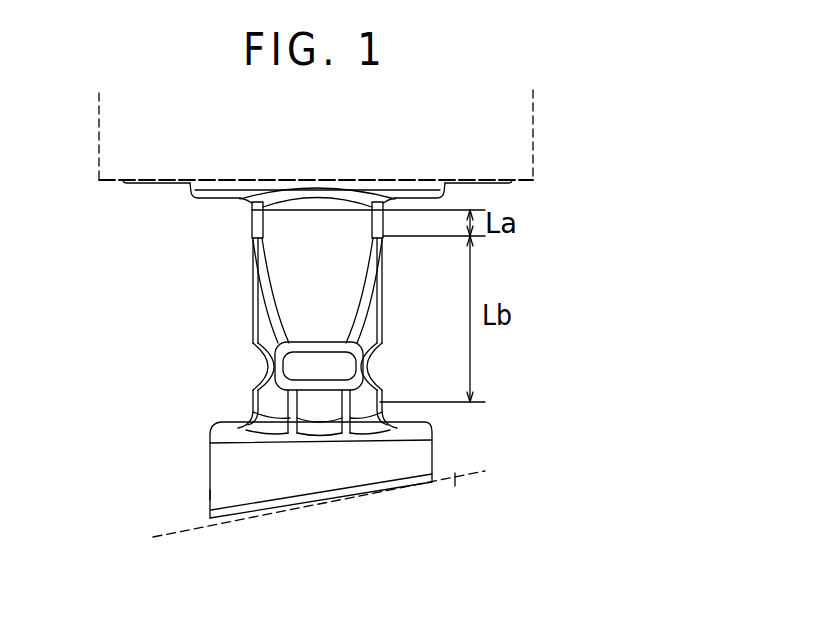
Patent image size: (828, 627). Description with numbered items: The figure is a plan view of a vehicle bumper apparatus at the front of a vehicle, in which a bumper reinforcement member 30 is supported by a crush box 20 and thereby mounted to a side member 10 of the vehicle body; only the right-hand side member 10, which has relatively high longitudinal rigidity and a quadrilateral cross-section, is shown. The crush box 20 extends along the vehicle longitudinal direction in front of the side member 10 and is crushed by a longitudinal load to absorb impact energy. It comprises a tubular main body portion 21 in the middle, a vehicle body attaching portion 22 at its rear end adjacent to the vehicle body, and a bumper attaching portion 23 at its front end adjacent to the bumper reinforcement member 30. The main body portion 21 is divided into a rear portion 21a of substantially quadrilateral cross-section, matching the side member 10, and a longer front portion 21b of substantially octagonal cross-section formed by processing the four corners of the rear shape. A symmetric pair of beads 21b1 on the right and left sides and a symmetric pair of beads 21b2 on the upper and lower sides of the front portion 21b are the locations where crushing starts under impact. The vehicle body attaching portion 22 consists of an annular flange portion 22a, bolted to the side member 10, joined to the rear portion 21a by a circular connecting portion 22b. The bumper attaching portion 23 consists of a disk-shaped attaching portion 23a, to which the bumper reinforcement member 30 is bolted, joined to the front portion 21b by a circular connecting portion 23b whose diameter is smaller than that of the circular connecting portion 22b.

The side member 10 is at (528, 124).
The crush box 20 is at (250, 333).
The main body portion 21 is at (253, 297).
The rear portion 21a is at (377, 223).
The front portion 21b is at (375, 310).
The beads 21b1 is at (268, 367).
The beads 21b2 is at (318, 368).
The vehicle body attaching portion 22 is at (250, 208).
The annular flange portion 22a is at (125, 183).
The circular connecting portion 22b is at (190, 196).
The bumper attaching portion 23 is at (210, 432).
The disk-shaped attaching portion 23a is at (243, 520).
The circular connecting portion 23b is at (210, 490).
The bumper reinforcement member 30 is at (457, 478).